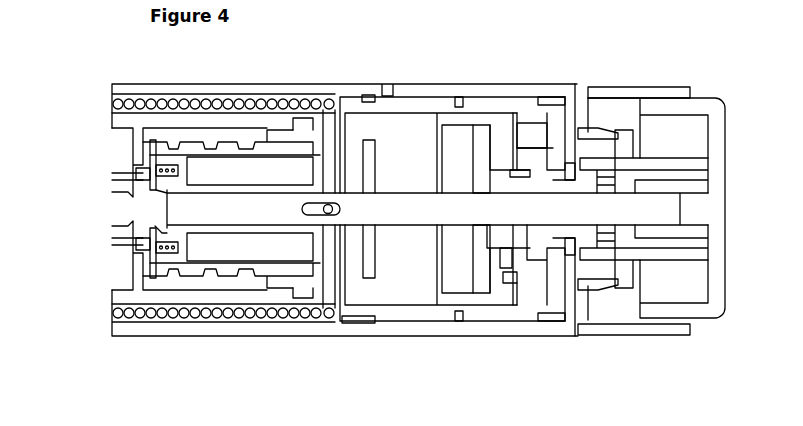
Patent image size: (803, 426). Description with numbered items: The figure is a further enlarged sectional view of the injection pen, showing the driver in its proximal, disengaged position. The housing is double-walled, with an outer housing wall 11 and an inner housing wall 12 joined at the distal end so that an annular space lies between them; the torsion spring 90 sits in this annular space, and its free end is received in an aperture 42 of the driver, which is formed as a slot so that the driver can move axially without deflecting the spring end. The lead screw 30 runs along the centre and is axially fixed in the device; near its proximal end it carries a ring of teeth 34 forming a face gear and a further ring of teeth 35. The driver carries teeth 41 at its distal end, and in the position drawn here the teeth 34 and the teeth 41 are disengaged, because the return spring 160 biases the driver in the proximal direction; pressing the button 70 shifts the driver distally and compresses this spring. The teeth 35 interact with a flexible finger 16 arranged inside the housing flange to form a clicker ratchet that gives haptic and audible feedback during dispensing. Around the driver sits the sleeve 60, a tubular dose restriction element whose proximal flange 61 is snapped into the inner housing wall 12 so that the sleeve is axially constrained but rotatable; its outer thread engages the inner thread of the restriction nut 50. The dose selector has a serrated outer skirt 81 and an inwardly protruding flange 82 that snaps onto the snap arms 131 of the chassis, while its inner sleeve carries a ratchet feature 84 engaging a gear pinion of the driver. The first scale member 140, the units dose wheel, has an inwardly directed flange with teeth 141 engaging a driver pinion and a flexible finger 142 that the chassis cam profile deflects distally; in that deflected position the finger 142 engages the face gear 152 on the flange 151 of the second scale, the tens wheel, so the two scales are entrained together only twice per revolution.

The outer housing wall 11 is at (120, 88).
The inner housing wall 12 is at (122, 120).
The flexible finger 16 is at (136, 248).
The lead screw 30 is at (122, 205).
The ring of teeth 34 is at (157, 229).
The ring of teeth 35 is at (140, 183).
The teeth 41 is at (158, 190).
The aperture 42 is at (318, 214).
The restriction nut 50 is at (288, 132).
The sleeve 60 is at (262, 272).
The proximal flange 61 is at (302, 122).
The button 70 is at (709, 314).
The serrated outer skirt 81 is at (658, 86).
The flange 82 is at (584, 312).
The ratchet feature 84 is at (611, 242).
The torsion spring 90 is at (112, 93).
The snap arms 131 is at (594, 131).
The first scale member 140 is at (516, 103).
The teeth 141 is at (500, 249).
The flexible finger 142 is at (531, 134).
The flange 151 is at (500, 120).
The face gear 152 is at (510, 280).
The return spring 160 is at (163, 253).